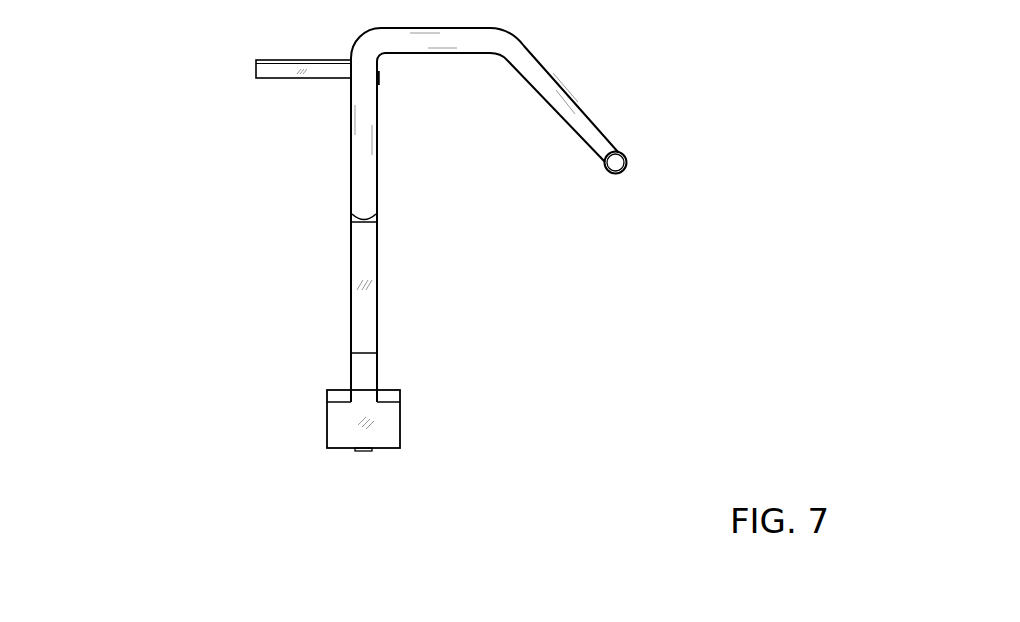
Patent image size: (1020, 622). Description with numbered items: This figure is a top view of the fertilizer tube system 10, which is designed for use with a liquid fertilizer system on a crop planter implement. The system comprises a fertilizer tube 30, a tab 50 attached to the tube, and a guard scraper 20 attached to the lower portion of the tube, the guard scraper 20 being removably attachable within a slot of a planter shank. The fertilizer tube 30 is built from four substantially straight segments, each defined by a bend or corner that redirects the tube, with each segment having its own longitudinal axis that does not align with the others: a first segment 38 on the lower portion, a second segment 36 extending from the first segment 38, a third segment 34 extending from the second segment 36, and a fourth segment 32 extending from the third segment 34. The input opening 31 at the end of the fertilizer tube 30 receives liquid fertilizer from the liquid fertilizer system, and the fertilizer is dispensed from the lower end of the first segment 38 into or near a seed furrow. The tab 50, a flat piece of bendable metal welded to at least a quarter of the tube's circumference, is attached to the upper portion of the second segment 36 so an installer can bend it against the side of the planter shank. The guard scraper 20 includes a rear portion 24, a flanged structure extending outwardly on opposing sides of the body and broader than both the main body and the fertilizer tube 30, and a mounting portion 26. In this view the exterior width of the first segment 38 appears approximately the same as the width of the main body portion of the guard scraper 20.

The fertilizer tube system 10 is at (155, 102).
The guard scraper 20 is at (313, 406).
The rear portion 24 is at (390, 416).
The mounting portion 26 is at (363, 248).
The fertilizer tube 30 is at (392, 171).
The input opening 31 is at (617, 163).
The fourth segment 32 is at (580, 105).
The third segment 34 is at (440, 53).
The second segment 36 is at (351, 128).
The first segment 38 is at (367, 450).
The tab 50 is at (273, 60).